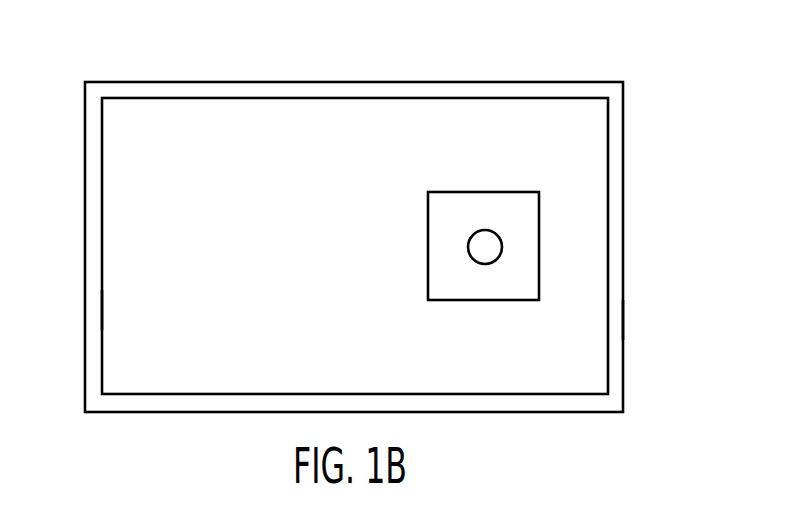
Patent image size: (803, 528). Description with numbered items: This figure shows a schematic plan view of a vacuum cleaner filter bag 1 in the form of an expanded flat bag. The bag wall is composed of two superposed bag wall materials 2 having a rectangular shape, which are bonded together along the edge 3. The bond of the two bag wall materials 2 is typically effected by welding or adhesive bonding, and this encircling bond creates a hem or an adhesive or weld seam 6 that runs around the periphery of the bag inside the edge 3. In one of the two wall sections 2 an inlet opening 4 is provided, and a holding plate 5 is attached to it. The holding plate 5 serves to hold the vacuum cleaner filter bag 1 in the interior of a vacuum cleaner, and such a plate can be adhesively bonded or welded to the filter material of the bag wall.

The vacuum cleaner filter bag 1 is at (660, 81).
The bag wall material 2 is at (130, 308).
The edge 3 is at (623, 318).
The inlet opening 4 is at (477, 243).
The holding plate 5 is at (455, 200).
The seam 6 is at (330, 97).